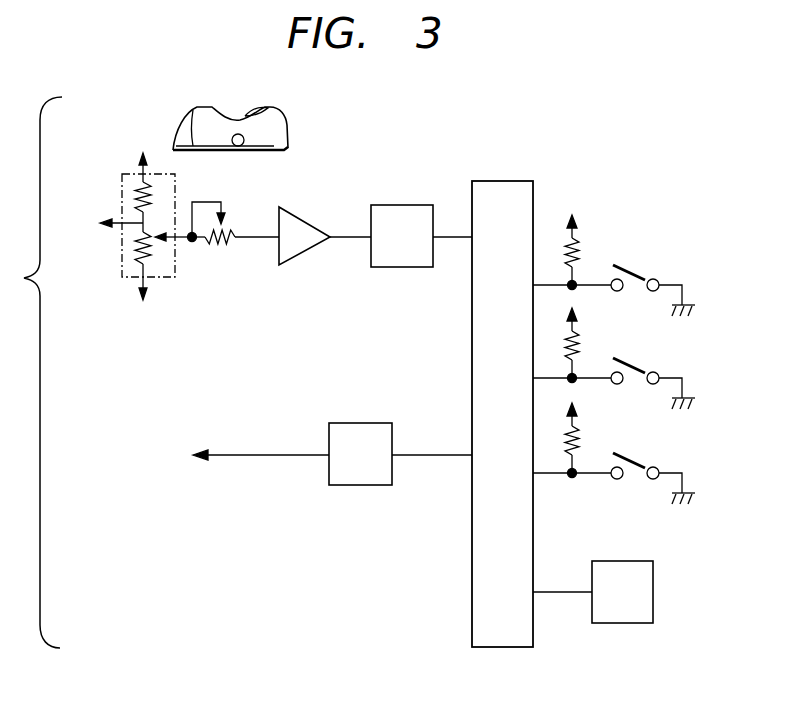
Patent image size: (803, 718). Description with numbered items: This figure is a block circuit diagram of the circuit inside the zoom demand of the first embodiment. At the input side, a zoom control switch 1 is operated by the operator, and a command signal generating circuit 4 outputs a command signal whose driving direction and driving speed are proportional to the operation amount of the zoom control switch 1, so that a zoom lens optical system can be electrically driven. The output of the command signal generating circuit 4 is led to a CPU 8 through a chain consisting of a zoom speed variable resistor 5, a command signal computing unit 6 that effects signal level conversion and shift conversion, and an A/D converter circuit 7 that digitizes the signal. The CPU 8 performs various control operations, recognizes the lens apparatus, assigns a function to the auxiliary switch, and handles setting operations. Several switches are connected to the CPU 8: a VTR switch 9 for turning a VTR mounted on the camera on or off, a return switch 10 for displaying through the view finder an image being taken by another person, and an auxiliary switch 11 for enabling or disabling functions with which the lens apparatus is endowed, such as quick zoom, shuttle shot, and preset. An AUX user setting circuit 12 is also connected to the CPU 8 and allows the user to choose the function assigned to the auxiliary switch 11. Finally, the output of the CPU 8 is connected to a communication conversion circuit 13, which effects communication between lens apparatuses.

The zoom control switch 1 is at (275, 122).
The command signal generating circuit 4 is at (122, 181).
The zoom speed variable resistor 5 is at (236, 243).
The command signal computing unit 6 is at (300, 222).
The A/D converter circuit 7 is at (408, 210).
The CPU 8 is at (508, 187).
The VTR switch 9 is at (633, 272).
The return switch 10 is at (633, 365).
The auxiliary switch 11 is at (633, 460).
The AUX user setting circuit 12 is at (627, 568).
The communication conversion circuit 13 is at (366, 432).